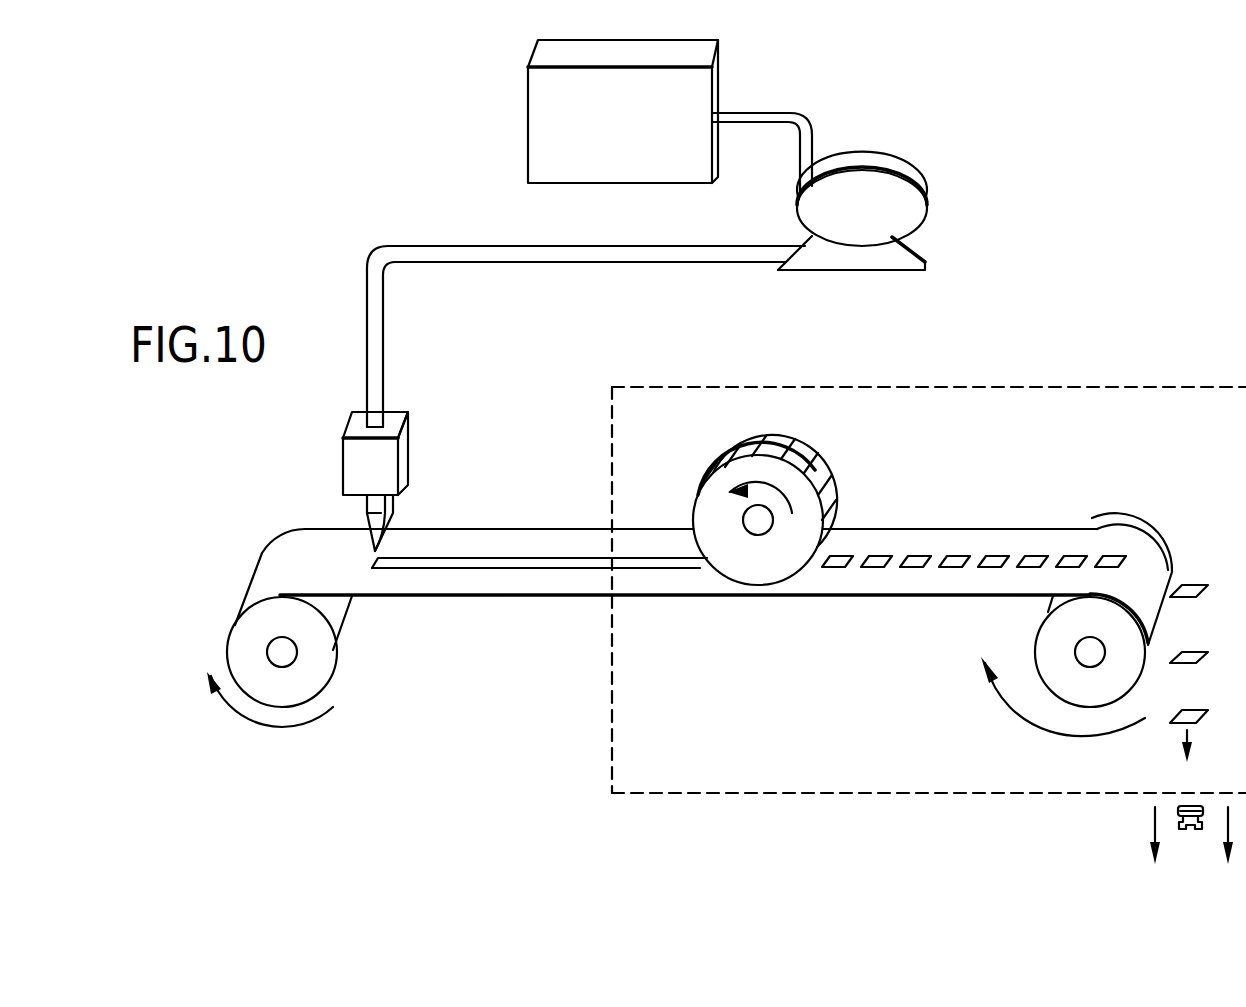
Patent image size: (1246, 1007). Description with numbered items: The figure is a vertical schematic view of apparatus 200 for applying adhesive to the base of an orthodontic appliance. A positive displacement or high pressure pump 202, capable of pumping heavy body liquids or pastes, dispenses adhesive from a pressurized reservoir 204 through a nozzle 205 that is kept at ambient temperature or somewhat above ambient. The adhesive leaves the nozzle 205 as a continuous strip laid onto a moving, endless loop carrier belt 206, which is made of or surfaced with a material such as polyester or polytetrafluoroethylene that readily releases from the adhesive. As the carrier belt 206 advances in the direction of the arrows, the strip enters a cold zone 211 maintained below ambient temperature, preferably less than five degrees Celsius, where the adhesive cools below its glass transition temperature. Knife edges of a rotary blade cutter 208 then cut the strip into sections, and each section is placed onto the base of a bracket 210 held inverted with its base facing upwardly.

The apparatus 200 is at (962, 81).
The pump 202 is at (913, 173).
The pressurized reservoir 204 is at (528, 97).
The nozzle 205 is at (392, 515).
The carrier belt 206 is at (395, 598).
The rotary blade cutter 208 is at (715, 502).
The bracket 210 is at (1182, 830).
The cold zone 211 is at (1143, 386).